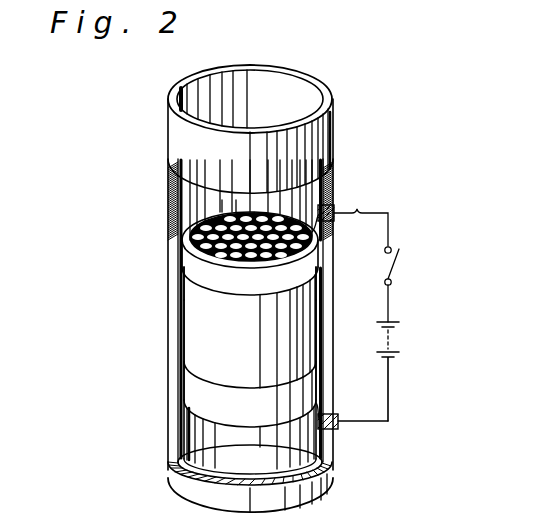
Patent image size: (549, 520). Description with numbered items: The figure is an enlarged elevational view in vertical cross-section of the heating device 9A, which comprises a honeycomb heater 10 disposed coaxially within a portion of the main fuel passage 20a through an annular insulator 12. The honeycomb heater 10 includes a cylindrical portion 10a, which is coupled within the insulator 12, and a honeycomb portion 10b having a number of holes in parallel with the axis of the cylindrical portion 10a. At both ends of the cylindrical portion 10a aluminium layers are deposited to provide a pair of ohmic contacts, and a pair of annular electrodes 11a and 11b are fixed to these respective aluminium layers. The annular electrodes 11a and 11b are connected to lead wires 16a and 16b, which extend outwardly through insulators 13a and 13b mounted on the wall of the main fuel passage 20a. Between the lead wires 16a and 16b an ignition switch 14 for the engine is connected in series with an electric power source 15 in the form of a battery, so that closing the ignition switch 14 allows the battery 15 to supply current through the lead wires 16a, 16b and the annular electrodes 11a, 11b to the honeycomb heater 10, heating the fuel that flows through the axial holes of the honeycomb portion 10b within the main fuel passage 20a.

The main fuel passage 20a is at (178, 141).
The honeycomb portion 10b is at (228, 210).
The heating device 9A is at (186, 222).
The annular electrode 11a is at (186, 249).
The cylindrical portion 10a is at (200, 273).
The annular insulator 12 is at (195, 316).
The honeycomb heater 10 is at (197, 387).
The annular electrode 11b is at (205, 421).
The insulator 13a is at (336, 207).
The lead wire 16a is at (358, 212).
The ignition switch 14 is at (396, 266).
The electric power source 15 is at (396, 344).
The lead wire 16b is at (350, 426).
The insulator 13b is at (337, 431).